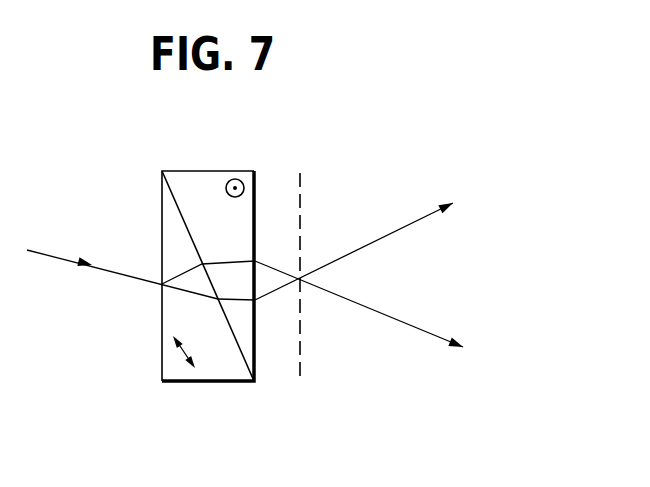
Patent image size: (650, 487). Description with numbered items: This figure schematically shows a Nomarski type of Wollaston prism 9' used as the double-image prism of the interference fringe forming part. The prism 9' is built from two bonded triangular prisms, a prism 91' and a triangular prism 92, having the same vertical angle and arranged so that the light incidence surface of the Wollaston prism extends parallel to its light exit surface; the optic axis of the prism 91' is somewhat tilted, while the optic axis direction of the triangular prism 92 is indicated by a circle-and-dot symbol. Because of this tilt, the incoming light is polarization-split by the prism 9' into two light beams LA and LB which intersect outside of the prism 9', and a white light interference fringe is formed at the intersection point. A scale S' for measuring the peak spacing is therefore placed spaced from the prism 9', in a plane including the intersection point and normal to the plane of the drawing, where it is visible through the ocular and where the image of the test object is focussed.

The Nomarski type of Wollaston prism 9' is at (184, 247).
The prism 91' is at (208, 305).
The triangular prism 92 is at (212, 178).
The light beam LA is at (390, 233).
The light beam LB is at (360, 305).
The scale S' is at (329, 285).